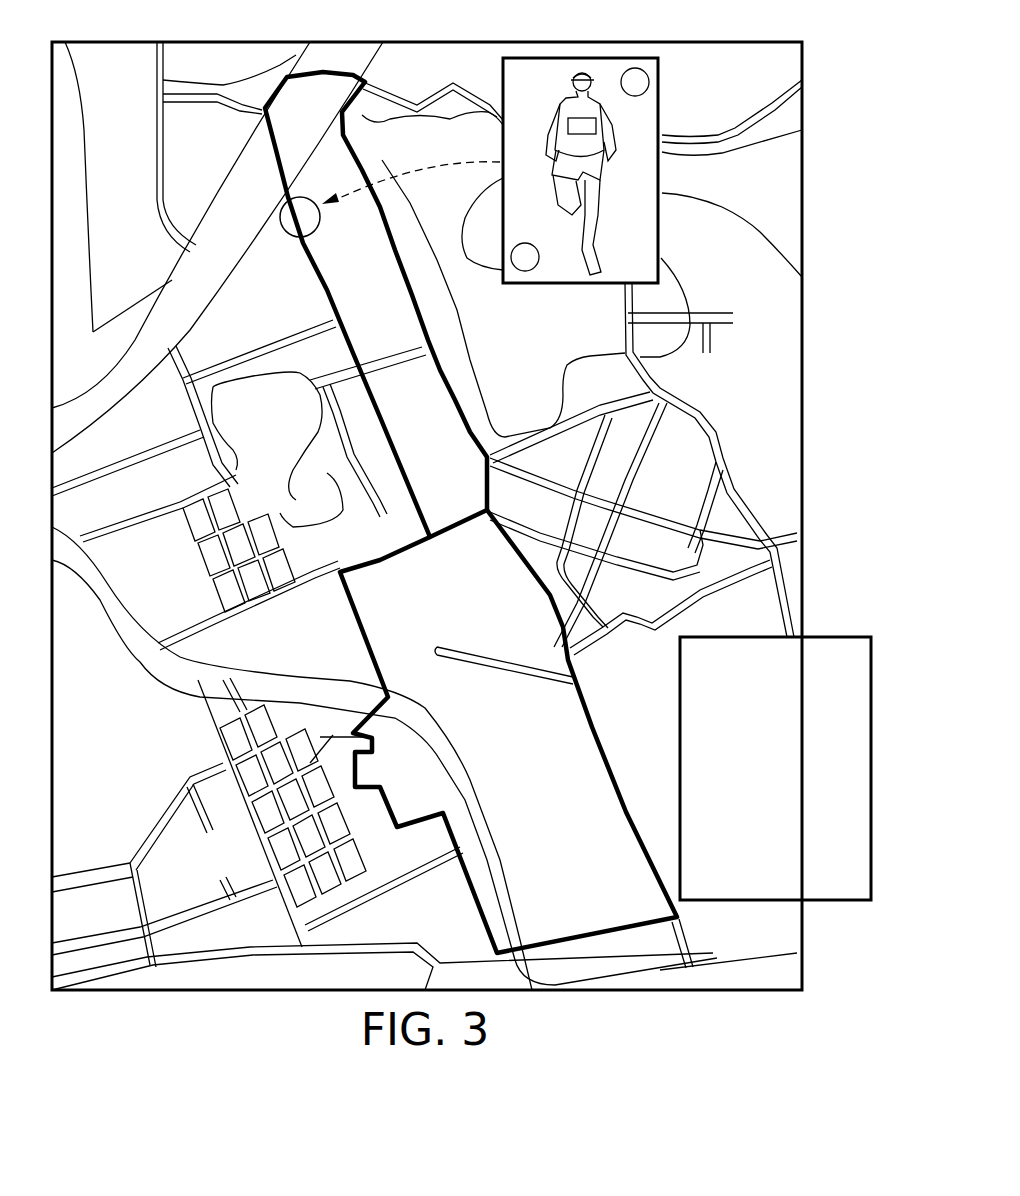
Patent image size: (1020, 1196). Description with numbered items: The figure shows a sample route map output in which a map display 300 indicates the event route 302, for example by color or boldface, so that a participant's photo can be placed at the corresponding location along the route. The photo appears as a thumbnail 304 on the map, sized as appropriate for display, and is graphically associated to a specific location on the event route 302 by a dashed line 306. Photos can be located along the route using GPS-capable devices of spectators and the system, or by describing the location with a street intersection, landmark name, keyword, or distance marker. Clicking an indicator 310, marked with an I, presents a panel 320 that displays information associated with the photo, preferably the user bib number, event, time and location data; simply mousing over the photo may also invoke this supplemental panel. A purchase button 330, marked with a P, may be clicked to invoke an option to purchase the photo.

The map display 300 is at (820, 87).
The event route 302 is at (320, 292).
The thumbnail 304 is at (582, 57).
The dashed line 306 is at (442, 170).
The indicator 310 is at (530, 243).
The panel 320 is at (845, 637).
The purchase button 330 is at (649, 82).